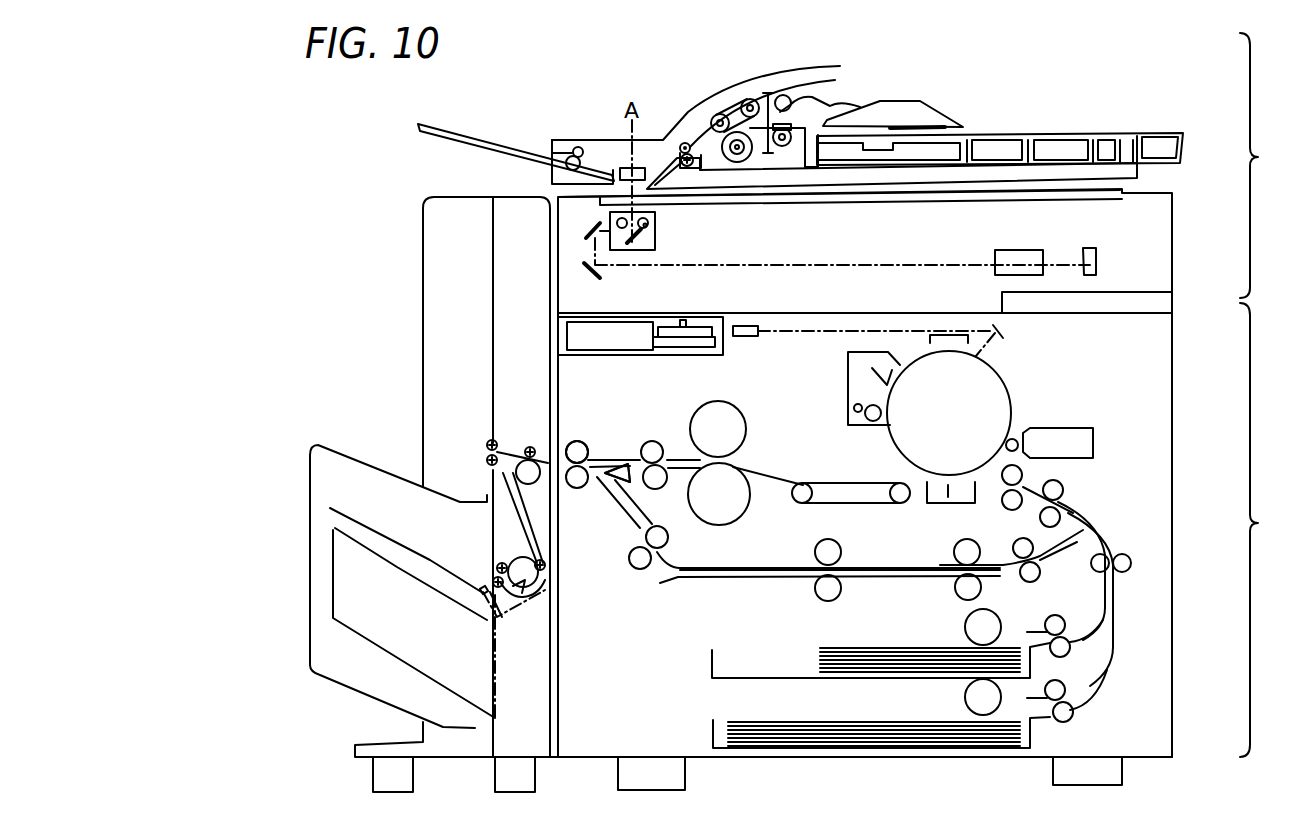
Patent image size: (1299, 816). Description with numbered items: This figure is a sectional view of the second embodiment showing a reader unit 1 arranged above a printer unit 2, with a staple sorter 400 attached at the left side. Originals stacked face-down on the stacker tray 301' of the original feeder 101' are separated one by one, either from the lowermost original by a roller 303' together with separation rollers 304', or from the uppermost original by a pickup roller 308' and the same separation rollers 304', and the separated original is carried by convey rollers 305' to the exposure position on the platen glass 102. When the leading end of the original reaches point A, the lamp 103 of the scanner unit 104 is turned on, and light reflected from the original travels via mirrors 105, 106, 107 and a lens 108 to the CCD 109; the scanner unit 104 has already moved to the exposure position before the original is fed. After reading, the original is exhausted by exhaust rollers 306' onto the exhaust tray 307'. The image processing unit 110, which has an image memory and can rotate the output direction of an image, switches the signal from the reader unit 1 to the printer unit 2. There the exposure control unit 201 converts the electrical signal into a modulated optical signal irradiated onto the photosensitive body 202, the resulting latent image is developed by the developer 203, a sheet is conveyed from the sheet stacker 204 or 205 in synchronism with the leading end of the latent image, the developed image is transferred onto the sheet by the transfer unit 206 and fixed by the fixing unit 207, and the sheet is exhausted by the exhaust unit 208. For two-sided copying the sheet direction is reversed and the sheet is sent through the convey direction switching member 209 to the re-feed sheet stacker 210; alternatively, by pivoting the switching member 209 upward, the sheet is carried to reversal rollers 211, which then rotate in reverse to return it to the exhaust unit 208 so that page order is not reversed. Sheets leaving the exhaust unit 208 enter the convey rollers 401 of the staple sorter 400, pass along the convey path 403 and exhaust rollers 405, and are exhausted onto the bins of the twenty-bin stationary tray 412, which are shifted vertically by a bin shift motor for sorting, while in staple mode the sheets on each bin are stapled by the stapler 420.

The reader unit 1 is at (1261, 165).
The printer unit 2 is at (1261, 530).
The original feeder 101' is at (1000, 123).
The platen glass 102 is at (932, 195).
The lamp 103 is at (660, 222).
The scanner unit 104 is at (656, 233).
The mirror 105 is at (663, 245).
The mirror 106 is at (587, 222).
The mirror 107 is at (597, 280).
The lens 108 is at (1022, 252).
The CCD 109 is at (1090, 249).
The image processing unit 110 is at (1172, 300).
The exposure control unit 201 is at (672, 320).
The photosensitive body 202 is at (923, 370).
The developer 203 is at (1067, 433).
The sheet stacker 204 is at (1037, 670).
The sheet stacker 205 is at (1062, 740).
The transfer unit 206 is at (946, 502).
The fixing unit 207 is at (737, 413).
The exhaust unit 208 is at (603, 457).
The convey direction switching member 209 is at (607, 480).
The re-feed sheet stacker 210 is at (862, 578).
The reversal rollers 211 is at (635, 573).
The stacker tray 301' is at (914, 101).
The roller 303' is at (856, 93).
The separation rollers 304' is at (729, 102).
The convey rollers 305' is at (669, 123).
The exhaust rollers 306' is at (563, 130).
The exhaust tray 307' is at (516, 128).
The pickup roller 308' is at (826, 102).
The staple sorter 400 is at (320, 465).
The convey rollers 401 is at (530, 447).
The convey path 403 is at (537, 538).
The exhaust rollers 405 is at (495, 563).
The stationary tray 412 is at (363, 527).
The stapler 420 is at (533, 605).